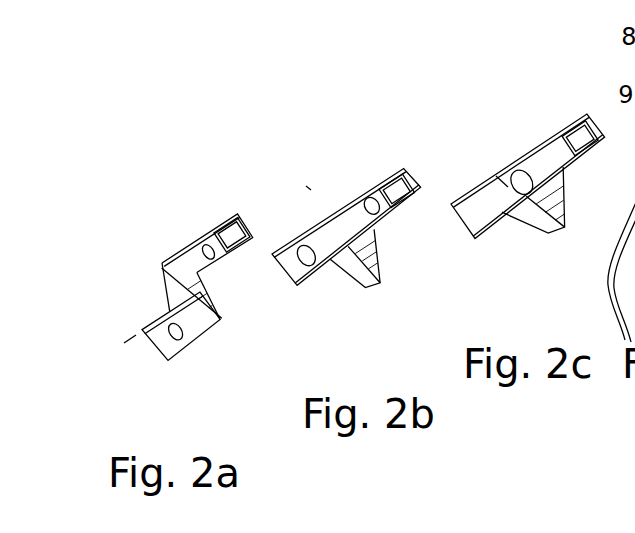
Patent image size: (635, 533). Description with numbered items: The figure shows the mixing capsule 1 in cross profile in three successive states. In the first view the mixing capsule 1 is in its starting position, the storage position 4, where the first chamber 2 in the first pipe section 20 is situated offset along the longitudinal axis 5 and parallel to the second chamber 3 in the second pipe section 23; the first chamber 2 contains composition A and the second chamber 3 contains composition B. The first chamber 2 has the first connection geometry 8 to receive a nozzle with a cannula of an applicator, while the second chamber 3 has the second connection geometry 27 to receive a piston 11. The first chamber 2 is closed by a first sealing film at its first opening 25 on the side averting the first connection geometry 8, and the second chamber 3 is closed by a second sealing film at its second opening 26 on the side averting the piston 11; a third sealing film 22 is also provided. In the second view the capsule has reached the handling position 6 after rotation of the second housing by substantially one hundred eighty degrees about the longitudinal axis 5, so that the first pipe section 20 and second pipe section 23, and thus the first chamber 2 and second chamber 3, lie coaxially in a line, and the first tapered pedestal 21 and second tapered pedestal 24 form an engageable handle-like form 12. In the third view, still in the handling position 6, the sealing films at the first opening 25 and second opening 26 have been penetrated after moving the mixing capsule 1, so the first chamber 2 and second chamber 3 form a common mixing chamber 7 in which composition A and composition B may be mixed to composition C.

In FIG. 2A, the mixing capsule 1 is at (80, 204).
In FIG. 2B, the mixing capsule 1 is at (266, 86).
In FIG. 2C, the mixing capsule 1 is at (458, 84).
In FIG. 2A, the first chamber 2 is at (200, 357).
In FIG. 2B, the first chamber 2 is at (308, 228).
In FIG. 2C, the first chamber 2 is at (492, 228).
In FIG. 2A, the second chamber 3 is at (172, 248).
In FIG. 2B, the second chamber 3 is at (370, 174).
In FIG. 2C, the second chamber 3 is at (566, 170).
In FIG. 2A, the storage position 4 is at (94, 295).
In FIG. 2A, the longitudinal axis 5 is at (108, 356).
In FIG. 2B, the handling position 6 is at (266, 138).
In FIG. 2C, the handling position 6 is at (473, 172).
In FIG. 2B, the common mixing chamber 7 is at (322, 212).
In FIG. 2C, the common mixing chamber 7 is at (500, 180).
In FIG. 2A, the first connection geometry 8 is at (151, 348).
In FIG. 2B, the first connection geometry 8 is at (275, 273).
In FIG. 2C, the first connection geometry 8 is at (468, 232).
In FIG. 2A, the piston 11 is at (217, 222).
In FIG. 2B, the piston 11 is at (388, 168).
In FIG. 2C, the piston 11 is at (569, 122).
In FIG. 2B, the engageable handle-like form 12 is at (383, 281).
In FIG. 2A, the first pipe section 20 is at (182, 357).
In FIG. 2B, the first pipe section 20 is at (318, 280).
In FIG. 2B, the first tapered pedestal 21 is at (360, 285).
In FIG. 2C, the first tapered pedestal 21 is at (533, 232).
In FIG. 2C, the third sealing film 22 is at (470, 240).
In FIG. 2A, the second pipe section 23 is at (183, 267).
In FIG. 2B, the second pipe section 23 is at (378, 235).
In FIG. 2B, the second tapered pedestal 24 is at (378, 265).
In FIG. 2C, the second tapered pedestal 24 is at (570, 210).
In FIG. 2A, the first opening 25 is at (220, 322).
In FIG. 2B, the first opening 25 is at (322, 207).
In FIG. 2A, the second opening 26 is at (158, 278).
In FIG. 2B, the second opening 26 is at (338, 212).
In FIG. 2A, the second connection geometry 27 is at (217, 230).
In FIG. 2C, the second connection geometry 27 is at (556, 126).